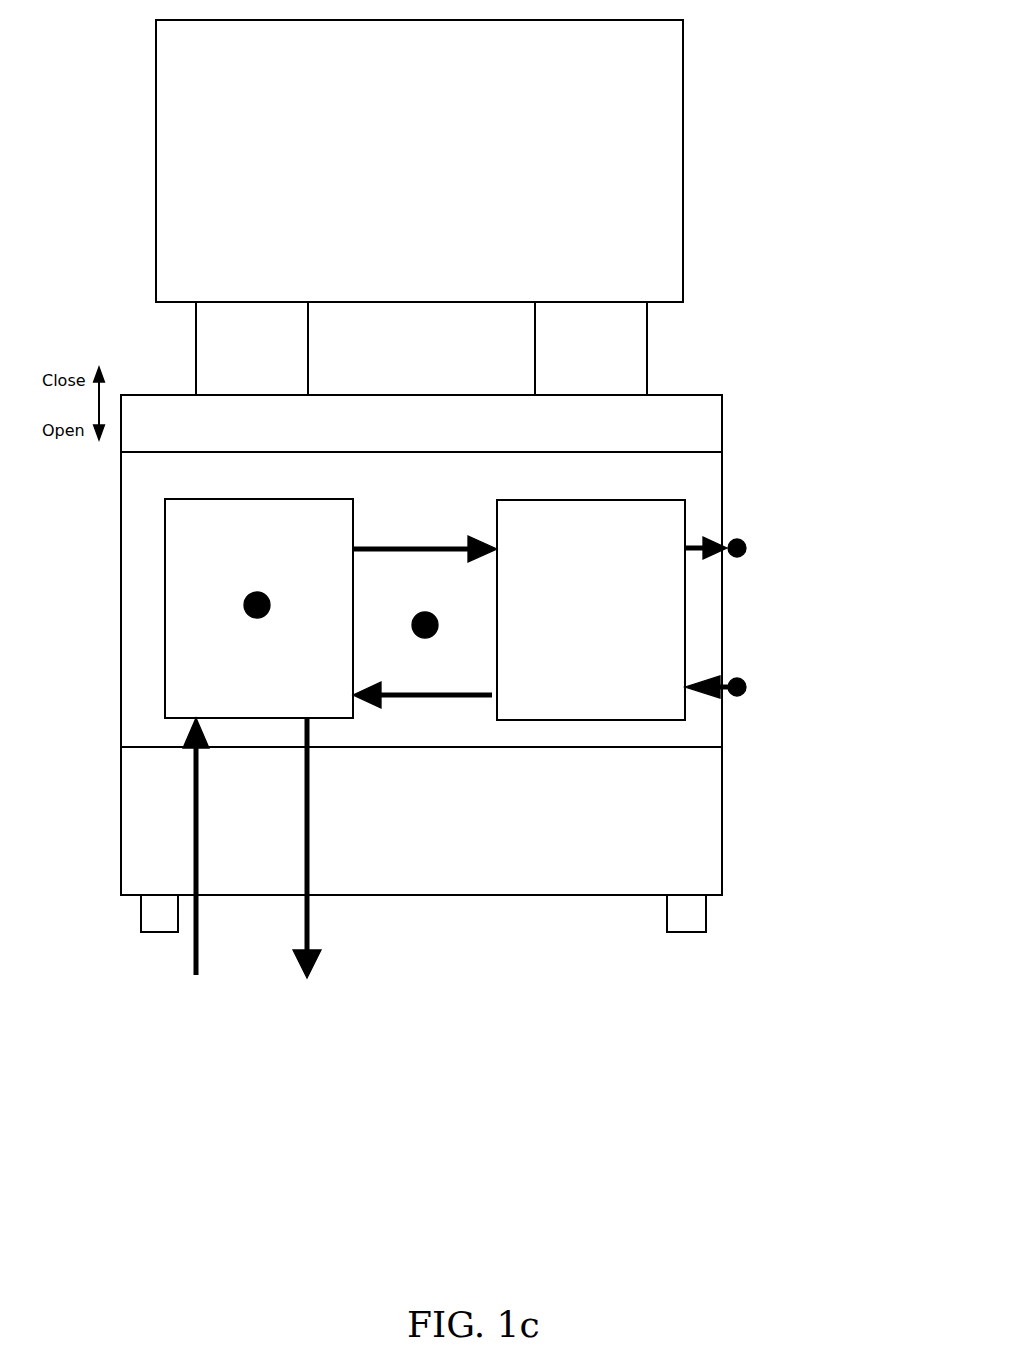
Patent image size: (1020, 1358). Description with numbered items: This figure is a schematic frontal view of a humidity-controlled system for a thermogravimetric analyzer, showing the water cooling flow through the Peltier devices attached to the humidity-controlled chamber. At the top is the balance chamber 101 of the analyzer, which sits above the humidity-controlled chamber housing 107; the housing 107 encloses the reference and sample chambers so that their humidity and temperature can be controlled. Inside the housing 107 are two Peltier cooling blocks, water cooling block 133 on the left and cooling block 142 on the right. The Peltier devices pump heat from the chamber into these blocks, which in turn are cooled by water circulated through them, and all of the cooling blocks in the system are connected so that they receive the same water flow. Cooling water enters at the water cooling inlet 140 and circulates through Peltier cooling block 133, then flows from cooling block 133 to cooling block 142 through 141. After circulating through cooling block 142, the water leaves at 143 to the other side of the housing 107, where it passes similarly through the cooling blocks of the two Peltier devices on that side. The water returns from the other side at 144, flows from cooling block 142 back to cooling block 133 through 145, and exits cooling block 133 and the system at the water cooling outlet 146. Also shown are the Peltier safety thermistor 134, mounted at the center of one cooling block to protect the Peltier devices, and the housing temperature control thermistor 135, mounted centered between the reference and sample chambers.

The balance chamber 101 is at (490, 161).
The humidity-controlled chamber housing 107 is at (464, 617).
The water cooling block 133 is at (158, 680).
The Peltier safety thermistor 134 is at (535, 729).
The housing temperature control thermistor 135 is at (614, 604).
The water cooling inlet 140 is at (180, 738).
The flow path from cooling block 133 to cooling block 142 141 is at (388, 543).
The Peltier cooling block 142 is at (670, 650).
The flow to the other side of the housing 143 is at (748, 542).
The return flow from the other side of the housing 144 is at (747, 695).
The flow path from cooling block 142 to cooling block 133 145 is at (450, 697).
The water cooling outlet 146 is at (313, 730).